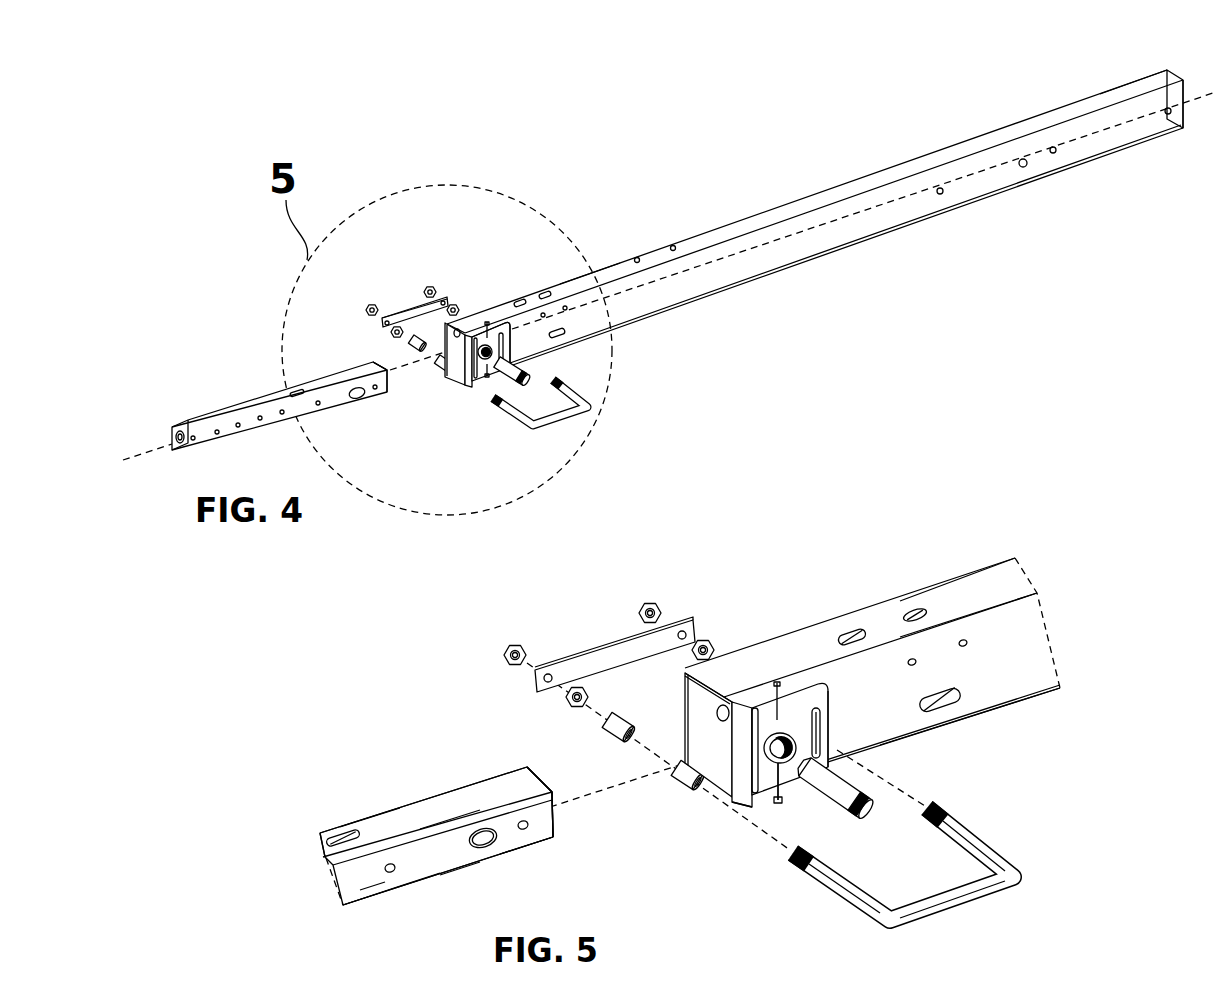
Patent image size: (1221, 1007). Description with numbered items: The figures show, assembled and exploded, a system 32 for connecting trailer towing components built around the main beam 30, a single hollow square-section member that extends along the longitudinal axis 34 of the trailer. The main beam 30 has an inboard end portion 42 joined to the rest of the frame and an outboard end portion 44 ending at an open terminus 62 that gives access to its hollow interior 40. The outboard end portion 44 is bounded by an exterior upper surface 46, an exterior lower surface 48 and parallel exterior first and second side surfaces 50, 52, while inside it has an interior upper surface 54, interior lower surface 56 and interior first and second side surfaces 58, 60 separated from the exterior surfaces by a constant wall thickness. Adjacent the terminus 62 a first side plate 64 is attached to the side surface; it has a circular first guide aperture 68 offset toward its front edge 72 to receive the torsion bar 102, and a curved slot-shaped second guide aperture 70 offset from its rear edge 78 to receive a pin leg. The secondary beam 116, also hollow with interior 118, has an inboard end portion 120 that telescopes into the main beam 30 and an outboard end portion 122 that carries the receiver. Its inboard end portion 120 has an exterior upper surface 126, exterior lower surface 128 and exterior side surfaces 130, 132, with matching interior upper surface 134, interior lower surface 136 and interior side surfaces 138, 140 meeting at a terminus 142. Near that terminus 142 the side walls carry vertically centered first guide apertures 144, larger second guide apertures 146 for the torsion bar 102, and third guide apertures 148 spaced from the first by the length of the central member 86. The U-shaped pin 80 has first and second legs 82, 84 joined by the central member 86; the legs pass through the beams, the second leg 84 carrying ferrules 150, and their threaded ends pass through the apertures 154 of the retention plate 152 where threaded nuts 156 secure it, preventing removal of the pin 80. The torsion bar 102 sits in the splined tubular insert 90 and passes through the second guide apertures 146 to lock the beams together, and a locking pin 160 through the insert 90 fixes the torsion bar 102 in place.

In FIG. 4, the main beam 30 is at (835, 190).
In FIG. 5, the main beam 30 is at (1015, 583).
In FIG. 4, the system for connecting trailer towing components 32 is at (492, 170).
In FIG. 5, the system for connecting trailer towing components 32 is at (844, 503).
In FIG. 4, the longitudinal axis 34 is at (1214, 93).
In FIG. 4, the hollow interior 40 is at (477, 354).
In FIG. 5, the hollow interior 40 is at (758, 739).
In FIG. 4, the inboard end portion 42 is at (907, 132).
In FIG. 4, the outboard end portion 44 is at (593, 215).
In FIG. 5, the outboard end portion 44 is at (961, 529).
In FIG. 5, the exterior upper surface 46 is at (890, 614).
In FIG. 5, the exterior lower surface 48 is at (929, 750).
In FIG. 5, the exterior first side surface 50 is at (996, 697).
In FIG. 5, the exterior second side surface 52 is at (863, 602).
In FIG. 5, the interior upper surface 54 is at (712, 712).
In FIG. 5, the interior lower surface 56 is at (720, 781).
In FIG. 5, the interior first side surface 58 is at (735, 800).
In FIG. 5, the interior second side surface 60 is at (704, 736).
In FIG. 5, the terminus 62 is at (684, 697).
In FIG. 4, the first side plate 64 is at (470, 372).
In FIG. 5, the first side plate 64 is at (833, 693).
In FIG. 5, the first guide aperture 68 is at (778, 768).
In FIG. 5, the second guide aperture 70 is at (822, 720).
In FIG. 5, the front edge 72 is at (755, 712).
In FIG. 5, the complimentary shaped aperture 78 is at (832, 740).
In FIG. 4, the pin 80 is at (575, 418).
In FIG. 5, the pin 80 is at (902, 878).
In FIG. 5, the first leg 82 is at (990, 845).
In FIG. 5, the second leg 84 is at (840, 892).
In FIG. 5, the central member 86 is at (980, 900).
In FIG. 4, the insert 90 is at (487, 358).
In FIG. 5, the insert 90 is at (783, 735).
In FIG. 4, the torsion bar 102 is at (553, 364).
In FIG. 5, the torsion bar 102 is at (868, 812).
In FIG. 4, the secondary beam 116 is at (245, 398).
In FIG. 5, the secondary beam 116 is at (415, 805).
In FIG. 5, the hollow interior 118 is at (328, 880).
In FIG. 4, the inboard end portion 120 is at (340, 355).
In FIG. 5, the inboard end portion 120 is at (494, 762).
In FIG. 4, the outboard end portion 122 is at (172, 413).
In FIG. 5, the exterior upper surface 126 is at (527, 780).
In FIG. 5, the exterior lower surface 128 is at (538, 845).
In FIG. 5, the exterior first side surface 130 is at (458, 862).
In FIG. 5, the exterior second side surface 132 is at (368, 818).
In FIG. 5, the interior upper surface 134 is at (398, 810).
In FIG. 5, the interior lower surface 136 is at (420, 890).
In FIG. 5, the interior first side surface 138 is at (370, 885).
In FIG. 5, the interior second side surface 140 is at (328, 845).
In FIG. 5, the terminus 142 is at (563, 838).
In FIG. 5, the first guide apertures 144 is at (548, 825).
In FIG. 5, the second guide apertures 146 is at (480, 825).
In FIG. 5, the third guide apertures 148 is at (393, 866).
In FIG. 4, the ferrules 150 is at (430, 353).
In FIG. 5, the ferrules 150 is at (604, 728).
In FIG. 4, the retention plate 152 is at (412, 305).
In FIG. 5, the retention plate 152 is at (614, 643).
In FIG. 5, the apertures 154 is at (549, 676).
In FIG. 4, the threaded nuts 156 is at (412, 312).
In FIG. 5, the threaded nuts 156 is at (514, 650).
In FIG. 4, the locking pin 160 is at (487, 349).
In FIG. 5, the locking pin 160 is at (778, 681).